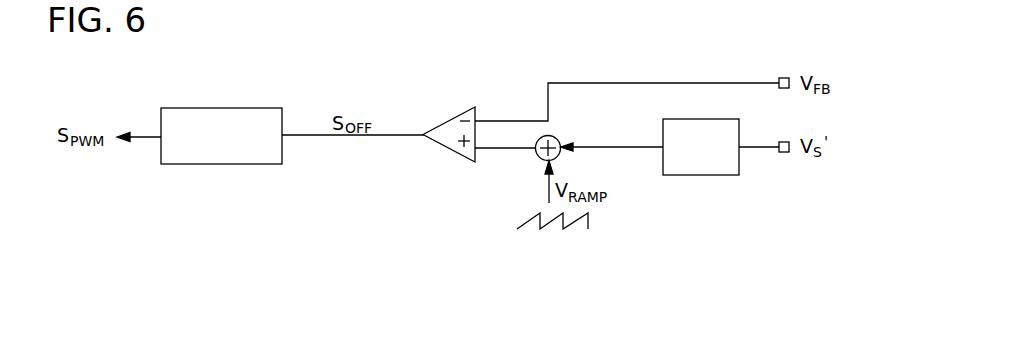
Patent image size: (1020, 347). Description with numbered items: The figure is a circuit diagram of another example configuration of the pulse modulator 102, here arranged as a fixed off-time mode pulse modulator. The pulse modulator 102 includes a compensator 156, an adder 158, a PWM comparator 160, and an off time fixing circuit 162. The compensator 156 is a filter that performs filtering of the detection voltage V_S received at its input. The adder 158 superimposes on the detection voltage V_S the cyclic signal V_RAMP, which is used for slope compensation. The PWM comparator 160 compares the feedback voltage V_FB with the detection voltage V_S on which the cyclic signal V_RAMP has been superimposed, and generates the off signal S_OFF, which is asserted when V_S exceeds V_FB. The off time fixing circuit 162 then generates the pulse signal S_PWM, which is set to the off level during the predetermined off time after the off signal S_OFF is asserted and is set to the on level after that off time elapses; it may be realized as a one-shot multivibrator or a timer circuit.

The pulse modulator 102 is at (466, 298).
The compensator 156 is at (712, 175).
The adder 158 is at (557, 139).
The PWM comparator 160 is at (437, 145).
The off time fixing circuit 162 is at (220, 164).